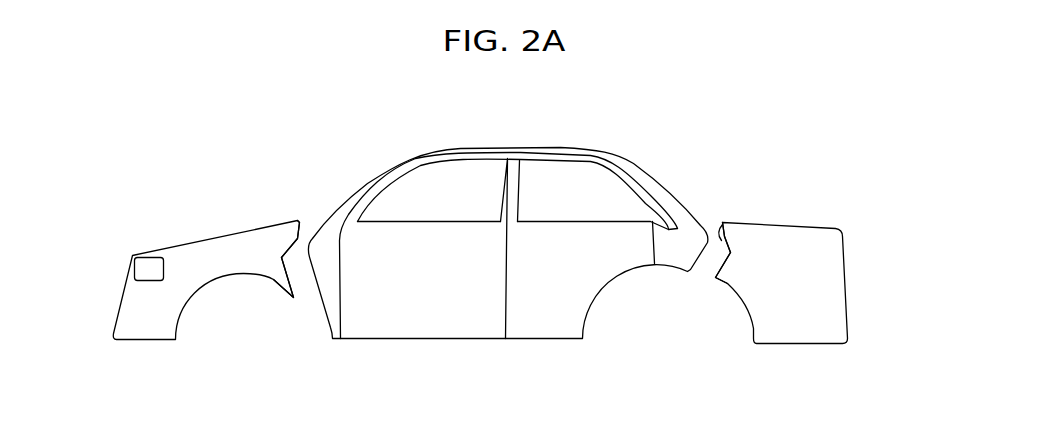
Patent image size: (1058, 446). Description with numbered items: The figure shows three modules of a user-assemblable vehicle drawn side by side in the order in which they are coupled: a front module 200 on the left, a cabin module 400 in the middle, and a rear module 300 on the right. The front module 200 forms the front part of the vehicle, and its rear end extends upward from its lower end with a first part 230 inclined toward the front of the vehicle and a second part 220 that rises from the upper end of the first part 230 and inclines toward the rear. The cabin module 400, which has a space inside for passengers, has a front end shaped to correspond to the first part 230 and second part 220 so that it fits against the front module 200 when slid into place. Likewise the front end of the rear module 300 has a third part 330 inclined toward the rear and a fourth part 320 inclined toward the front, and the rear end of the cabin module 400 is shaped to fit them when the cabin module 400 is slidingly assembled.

The front module 200 is at (161, 243).
The second part 220 is at (288, 245).
The first part 230 is at (276, 281).
The rear module 300 is at (828, 224).
The fourth part 320 is at (727, 243).
The third part 330 is at (716, 272).
The cabin module 400 is at (443, 317).